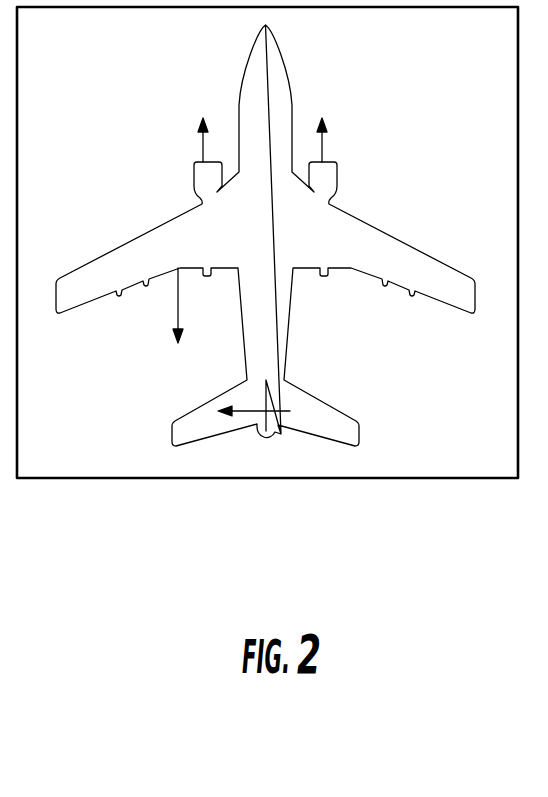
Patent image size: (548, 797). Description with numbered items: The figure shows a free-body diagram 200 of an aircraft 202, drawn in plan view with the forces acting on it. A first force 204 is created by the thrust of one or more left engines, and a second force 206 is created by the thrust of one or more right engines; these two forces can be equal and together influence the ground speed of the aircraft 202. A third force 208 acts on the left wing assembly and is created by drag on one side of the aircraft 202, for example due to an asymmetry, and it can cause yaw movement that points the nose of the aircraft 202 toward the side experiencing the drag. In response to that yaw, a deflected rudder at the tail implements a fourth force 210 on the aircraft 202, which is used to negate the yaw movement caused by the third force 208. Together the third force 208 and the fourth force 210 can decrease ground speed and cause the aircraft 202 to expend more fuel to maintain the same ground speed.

The free-body diagram 200 is at (267, 268).
The aircraft 202 is at (265, 235).
The first force 204 is at (175, 137).
The second force 206 is at (351, 136).
The third force 208 is at (148, 311).
The fourth force 210 is at (254, 440).